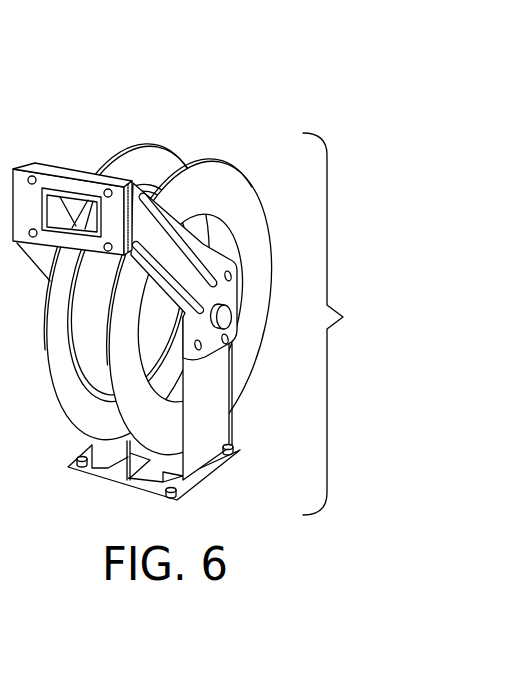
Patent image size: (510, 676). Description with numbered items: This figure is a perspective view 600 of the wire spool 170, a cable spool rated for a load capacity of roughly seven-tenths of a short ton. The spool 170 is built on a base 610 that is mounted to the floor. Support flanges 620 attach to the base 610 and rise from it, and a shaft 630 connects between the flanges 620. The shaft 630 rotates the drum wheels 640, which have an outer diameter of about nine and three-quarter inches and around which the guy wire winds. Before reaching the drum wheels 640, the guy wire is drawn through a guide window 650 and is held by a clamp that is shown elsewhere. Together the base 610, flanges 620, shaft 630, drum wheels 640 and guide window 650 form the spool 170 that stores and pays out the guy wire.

The perspective view 600 is at (200, 265).
The base 610 is at (115, 479).
The support flanges 620 is at (232, 427).
The shaft 630 is at (224, 318).
The drum wheels 640 is at (246, 171).
The guide window 650 is at (78, 176).
The wire spool 170 is at (345, 324).